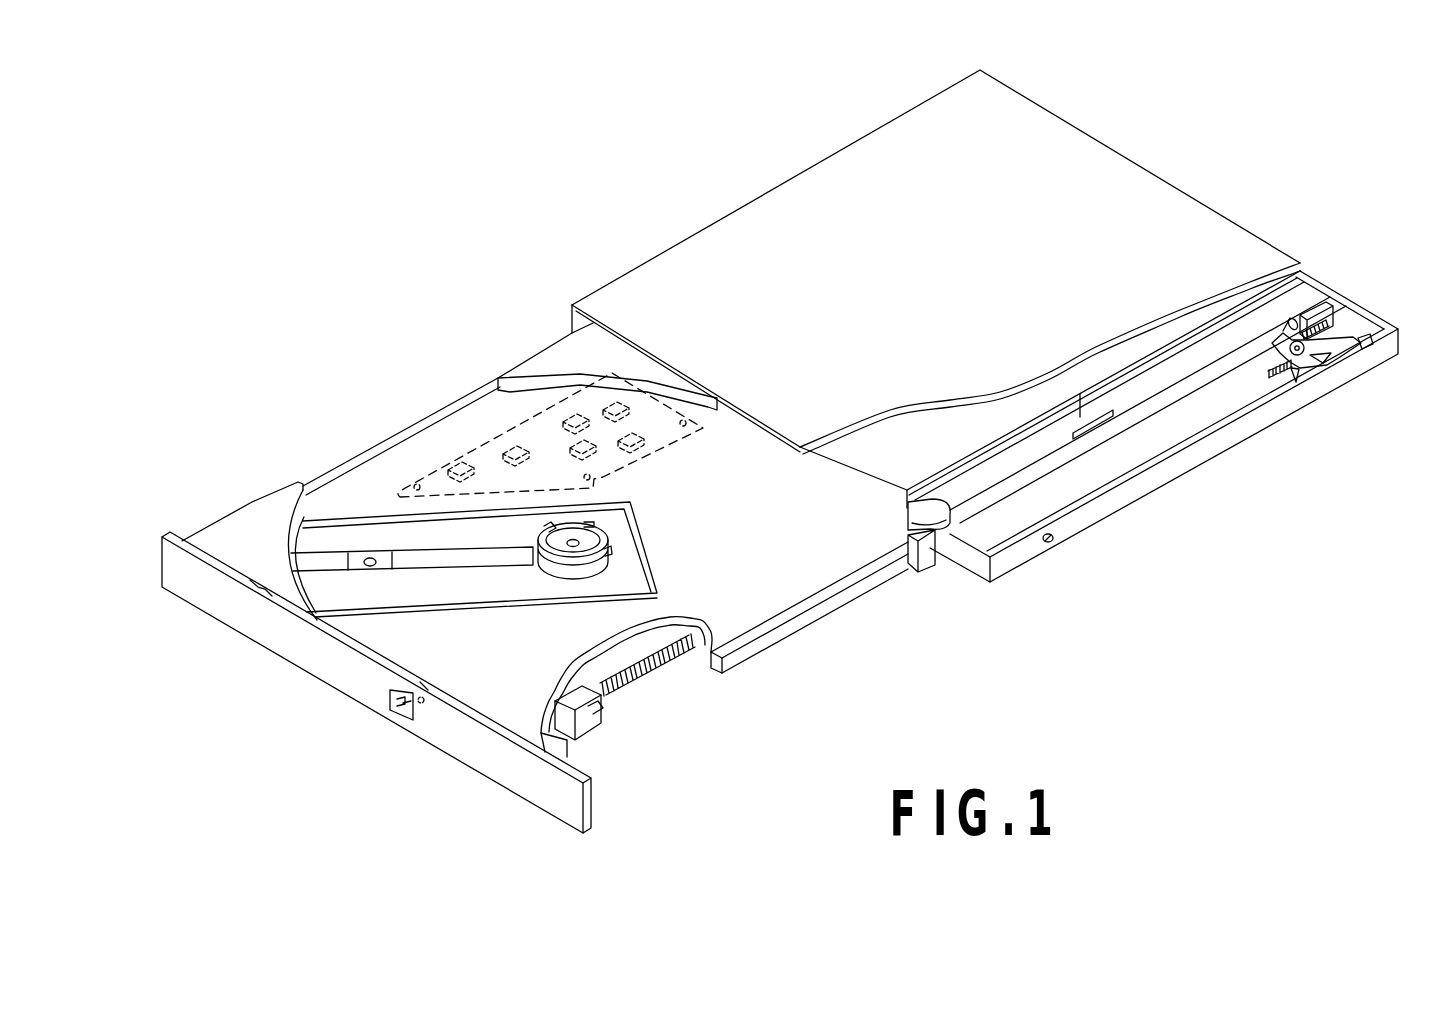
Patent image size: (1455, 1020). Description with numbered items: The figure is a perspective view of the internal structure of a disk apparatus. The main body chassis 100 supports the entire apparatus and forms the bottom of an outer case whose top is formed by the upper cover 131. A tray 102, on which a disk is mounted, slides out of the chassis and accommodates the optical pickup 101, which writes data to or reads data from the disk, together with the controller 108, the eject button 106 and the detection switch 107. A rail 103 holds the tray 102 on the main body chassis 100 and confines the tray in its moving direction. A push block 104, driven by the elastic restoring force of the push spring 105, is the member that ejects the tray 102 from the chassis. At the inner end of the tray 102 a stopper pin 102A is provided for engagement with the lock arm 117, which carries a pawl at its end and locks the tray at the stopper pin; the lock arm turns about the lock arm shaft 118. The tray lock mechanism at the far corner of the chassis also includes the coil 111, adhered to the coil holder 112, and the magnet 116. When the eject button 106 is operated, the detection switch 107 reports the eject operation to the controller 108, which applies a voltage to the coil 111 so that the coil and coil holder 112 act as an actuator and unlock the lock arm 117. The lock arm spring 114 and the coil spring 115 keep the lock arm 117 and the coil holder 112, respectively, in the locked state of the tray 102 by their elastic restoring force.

The main body chassis 100 is at (1132, 507).
The optical pickup 101 is at (338, 530).
The tray 102 is at (503, 713).
The stopper pin 102A is at (945, 533).
The rail 103 is at (790, 625).
The push block 104 is at (592, 724).
The push spring 105 is at (661, 672).
The eject button 106 is at (390, 708).
The detection switch 107 is at (421, 705).
The controller 108 is at (483, 443).
The coil 111 is at (1343, 362).
The coil holder 112 is at (1294, 372).
The lock arm spring 114 is at (1350, 336).
The coil spring 115 is at (1276, 378).
The magnet 116 is at (1371, 346).
The lock arm 117 is at (1317, 308).
The lock arm shaft 118 is at (1297, 313).
The upper cover 131 is at (1106, 157).